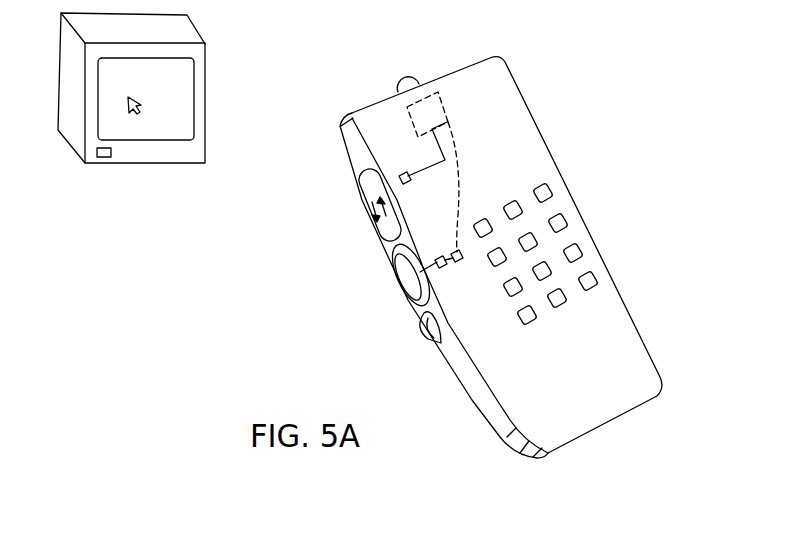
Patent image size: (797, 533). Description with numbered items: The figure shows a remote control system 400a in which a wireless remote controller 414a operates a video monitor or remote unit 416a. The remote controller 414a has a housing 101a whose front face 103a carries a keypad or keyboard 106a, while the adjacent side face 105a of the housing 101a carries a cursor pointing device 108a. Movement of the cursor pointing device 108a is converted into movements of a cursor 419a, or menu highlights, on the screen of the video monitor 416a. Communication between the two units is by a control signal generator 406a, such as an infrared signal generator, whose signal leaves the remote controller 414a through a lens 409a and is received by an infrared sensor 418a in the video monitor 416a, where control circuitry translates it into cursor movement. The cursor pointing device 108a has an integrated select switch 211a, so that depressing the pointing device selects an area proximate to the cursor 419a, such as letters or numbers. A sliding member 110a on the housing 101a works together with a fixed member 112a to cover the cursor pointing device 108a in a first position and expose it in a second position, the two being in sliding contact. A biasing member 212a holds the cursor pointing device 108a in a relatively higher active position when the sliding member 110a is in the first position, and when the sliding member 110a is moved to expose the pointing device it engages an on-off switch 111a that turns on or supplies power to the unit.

The remote control system 400a is at (613, 40).
The housing 101a is at (662, 372).
The front face 103a is at (620, 353).
The side face 105a is at (352, 148).
The keypad 106a is at (557, 203).
The cursor pointing device 108a is at (405, 282).
The sliding member 110a is at (360, 217).
The on-off switch 111a is at (402, 175).
The fixed member 112a is at (427, 334).
The select switch 211a is at (463, 260).
The biasing member 212a is at (437, 257).
The control signal generator 406a is at (447, 122).
The lens 409a is at (403, 77).
The remote controller 414a is at (565, 453).
The video monitor 416a is at (208, 53).
The infrared sensor 418a is at (108, 158).
The cursor 419a is at (132, 97).